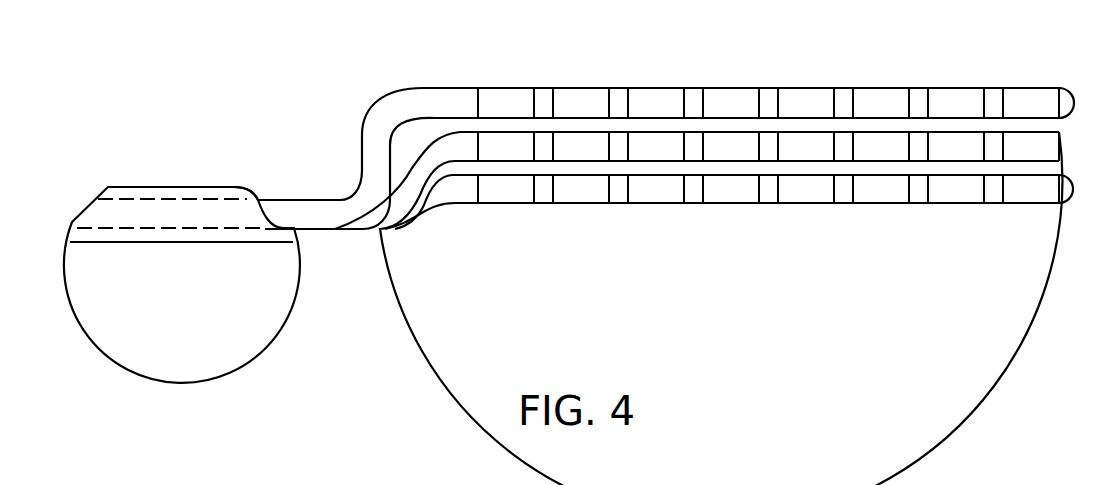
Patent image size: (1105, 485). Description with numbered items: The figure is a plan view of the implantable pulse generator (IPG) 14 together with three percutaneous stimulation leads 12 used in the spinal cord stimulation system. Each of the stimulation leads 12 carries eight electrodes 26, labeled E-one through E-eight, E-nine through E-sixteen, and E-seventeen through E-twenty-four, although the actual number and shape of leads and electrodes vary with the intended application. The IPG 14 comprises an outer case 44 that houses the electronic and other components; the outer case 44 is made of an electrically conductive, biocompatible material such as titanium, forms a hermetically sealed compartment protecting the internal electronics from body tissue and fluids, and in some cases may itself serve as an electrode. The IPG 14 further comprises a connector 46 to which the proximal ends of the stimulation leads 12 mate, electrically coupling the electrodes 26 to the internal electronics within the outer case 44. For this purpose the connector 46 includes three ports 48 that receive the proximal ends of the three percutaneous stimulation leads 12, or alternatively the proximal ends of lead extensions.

The stimulation leads 12 is at (666, 253).
The implantable pulse generator 14 is at (191, 249).
The electrodes 26 is at (655, 87).
The outer case 44 is at (292, 272).
The connector 46 is at (132, 187).
The ports 48 is at (185, 218).